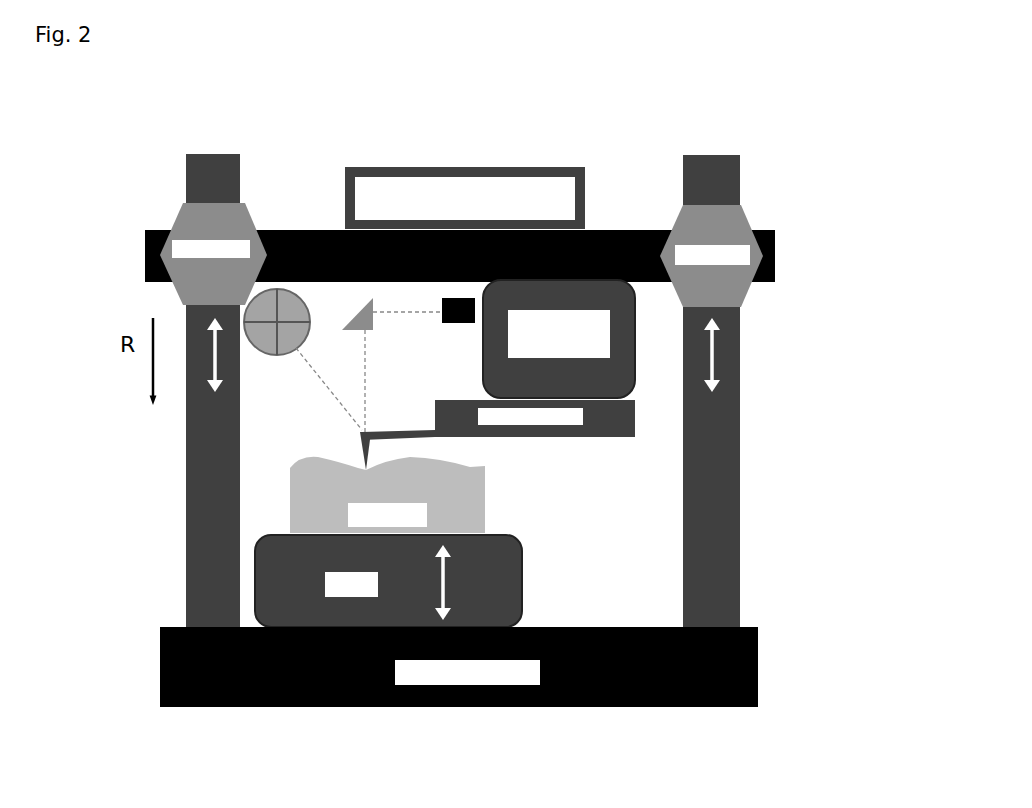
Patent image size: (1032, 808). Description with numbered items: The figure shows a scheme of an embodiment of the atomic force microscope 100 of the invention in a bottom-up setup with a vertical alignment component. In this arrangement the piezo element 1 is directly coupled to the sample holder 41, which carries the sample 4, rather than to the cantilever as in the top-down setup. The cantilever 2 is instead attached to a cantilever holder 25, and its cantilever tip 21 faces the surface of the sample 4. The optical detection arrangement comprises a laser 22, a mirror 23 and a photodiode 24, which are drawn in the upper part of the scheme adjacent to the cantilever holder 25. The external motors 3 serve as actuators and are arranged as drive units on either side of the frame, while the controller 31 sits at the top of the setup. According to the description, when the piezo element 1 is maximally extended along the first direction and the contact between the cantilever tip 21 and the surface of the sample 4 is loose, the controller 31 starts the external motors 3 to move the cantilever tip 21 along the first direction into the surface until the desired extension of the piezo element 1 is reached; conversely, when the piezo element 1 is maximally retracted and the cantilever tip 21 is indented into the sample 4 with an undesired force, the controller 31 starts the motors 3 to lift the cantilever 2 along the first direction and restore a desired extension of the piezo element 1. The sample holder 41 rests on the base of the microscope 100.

The atomic force microscope 100 is at (140, 723).
The piezo element 1 is at (495, 579).
The cantilever 2 is at (645, 413).
The cantilever tip 21 is at (355, 466).
The laser 22 is at (478, 292).
The mirror 23 is at (353, 318).
The photodiode 24 is at (291, 308).
The cantilever holder 25 is at (623, 352).
The motor 3 is at (192, 228).
The controller 31 is at (460, 187).
The sample 4 is at (293, 511).
The sample holder 41 is at (765, 628).